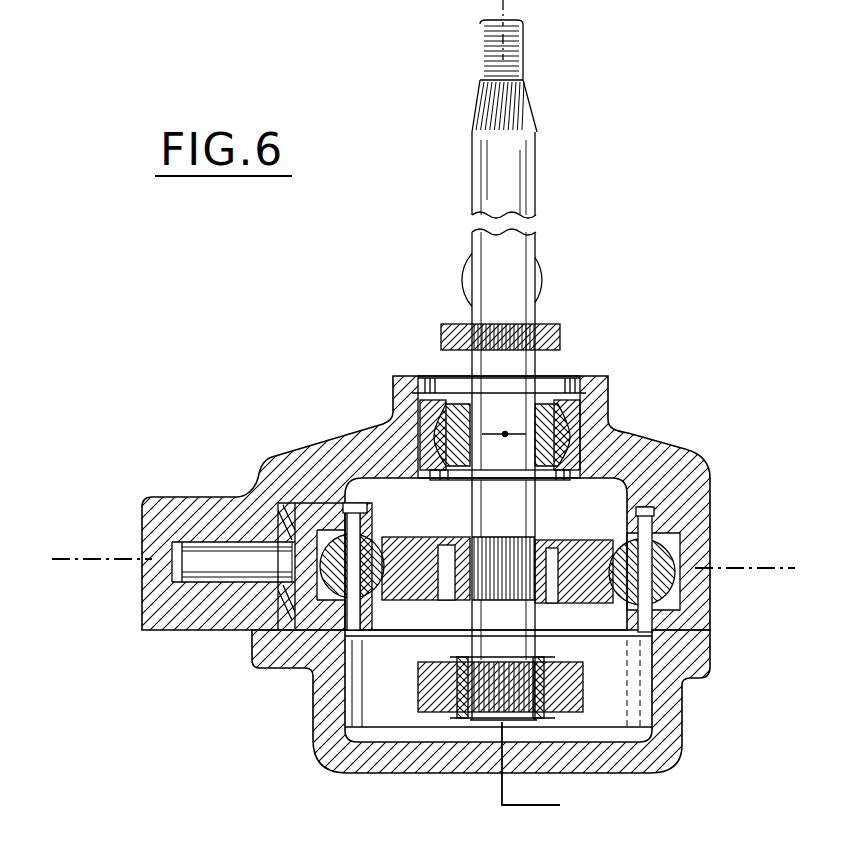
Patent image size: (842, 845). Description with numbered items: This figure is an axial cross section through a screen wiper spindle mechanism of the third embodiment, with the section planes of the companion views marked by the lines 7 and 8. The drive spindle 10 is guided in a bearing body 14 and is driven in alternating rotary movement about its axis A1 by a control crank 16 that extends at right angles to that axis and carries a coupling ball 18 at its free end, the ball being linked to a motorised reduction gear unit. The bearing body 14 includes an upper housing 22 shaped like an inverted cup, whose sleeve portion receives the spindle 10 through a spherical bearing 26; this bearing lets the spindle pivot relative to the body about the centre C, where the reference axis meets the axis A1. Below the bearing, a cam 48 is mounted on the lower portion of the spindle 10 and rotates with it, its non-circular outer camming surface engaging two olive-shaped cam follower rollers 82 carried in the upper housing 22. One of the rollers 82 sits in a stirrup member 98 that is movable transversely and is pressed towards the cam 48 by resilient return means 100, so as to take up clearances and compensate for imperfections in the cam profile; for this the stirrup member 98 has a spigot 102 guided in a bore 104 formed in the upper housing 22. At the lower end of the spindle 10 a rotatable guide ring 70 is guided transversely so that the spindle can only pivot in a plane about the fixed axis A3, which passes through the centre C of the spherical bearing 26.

The drive spindle 10 is at (480, 197).
The axis of the spindle A1 is at (508, 168).
The coupling ball 18 is at (543, 266).
The control crank 16 is at (560, 340).
The spherical bearing 26 is at (572, 370).
The centre of the articulation C is at (505, 434).
The fixed axis A3 is at (506, 434).
The bearing body 14 is at (318, 428).
The upper housing 22 is at (267, 458).
The bore 104 is at (172, 545).
The spigot 102 is at (203, 557).
The resilient return means 100 is at (278, 582).
The stirrup member 98 is at (308, 612).
The cam follower rollers 82 is at (378, 562).
The cam 48 is at (592, 565).
The guide ring 70 is at (420, 688).
The section line 7- 7 is at (75, 546).
The section line 8- 8 is at (514, 805).